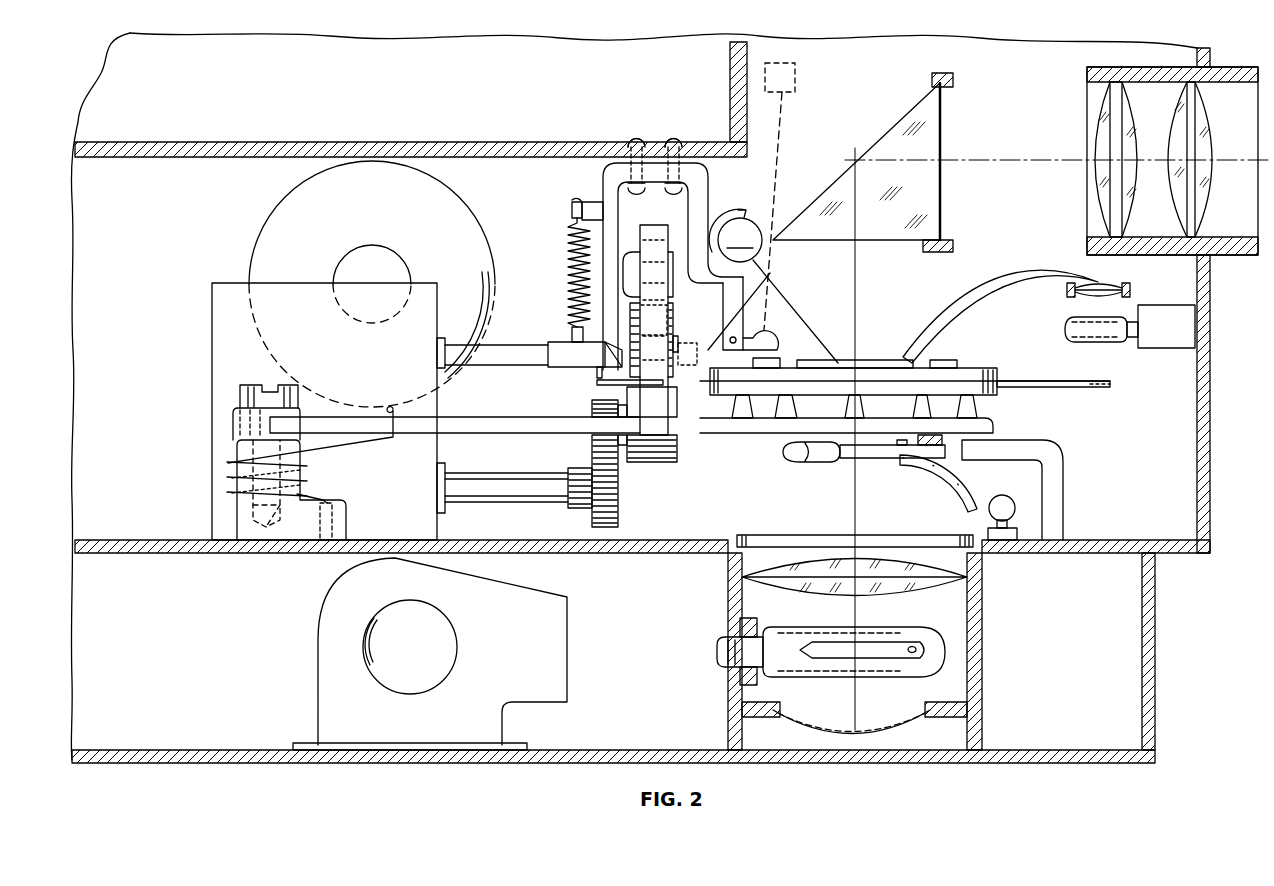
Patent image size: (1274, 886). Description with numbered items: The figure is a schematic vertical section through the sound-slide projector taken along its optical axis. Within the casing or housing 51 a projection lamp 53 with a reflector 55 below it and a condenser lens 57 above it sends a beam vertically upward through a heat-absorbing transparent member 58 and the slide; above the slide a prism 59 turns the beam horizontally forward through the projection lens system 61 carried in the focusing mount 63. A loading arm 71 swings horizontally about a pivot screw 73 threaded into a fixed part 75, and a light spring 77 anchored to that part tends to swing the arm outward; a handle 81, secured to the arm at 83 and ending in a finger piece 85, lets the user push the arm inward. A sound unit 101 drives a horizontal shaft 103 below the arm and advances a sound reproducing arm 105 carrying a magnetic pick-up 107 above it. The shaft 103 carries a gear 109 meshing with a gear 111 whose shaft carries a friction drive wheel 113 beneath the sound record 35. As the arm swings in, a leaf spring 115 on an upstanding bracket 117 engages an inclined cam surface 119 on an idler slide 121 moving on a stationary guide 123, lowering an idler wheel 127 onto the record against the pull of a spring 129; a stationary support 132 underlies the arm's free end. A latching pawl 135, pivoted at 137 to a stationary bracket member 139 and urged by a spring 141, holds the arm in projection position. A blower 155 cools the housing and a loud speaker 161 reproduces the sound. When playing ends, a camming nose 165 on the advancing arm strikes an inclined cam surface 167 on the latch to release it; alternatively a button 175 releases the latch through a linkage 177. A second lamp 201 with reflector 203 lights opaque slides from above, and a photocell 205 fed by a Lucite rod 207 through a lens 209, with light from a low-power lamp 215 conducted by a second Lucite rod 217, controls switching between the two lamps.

The sound record 35 is at (1110, 387).
The casing or housing 51 is at (1207, 553).
The projection bulb or lamp 53 is at (935, 650).
The reflector 55 is at (885, 720).
The condenser lens 57 is at (928, 583).
The heat-absorbing transparent member 58 is at (795, 535).
The prism 59 is at (940, 200).
The projection lens system 61 is at (1178, 200).
The focusing mount 63 is at (1155, 67).
The loading arm 71 is at (495, 422).
The pivot screw 73 is at (265, 385).
The fixed part 75 is at (250, 520).
The light spring 77 is at (300, 490).
The handle 81 is at (870, 455).
The handle attachment point 83 is at (917, 472).
The finger piece 85 is at (800, 455).
The sound unit 101 is at (212, 405).
The horizontal shaft 103 is at (515, 490).
The sound reproducing arm 105 is at (510, 345).
The magnetic pick-up 107 is at (597, 372).
The gear 109 is at (605, 505).
The gear 111 is at (595, 440).
The friction drive wheel 113 is at (677, 440).
The leaf spring 115 is at (652, 235).
The upstanding bracket 117 is at (655, 320).
The inclined cam surface 119 is at (640, 262).
The idler slide 121 is at (632, 303).
The stationary guide 123 is at (603, 180).
The idler wheel 127 is at (603, 385).
The spring 129 is at (575, 232).
The stationary support 132 is at (1010, 450).
The latching pawl 135 is at (838, 363).
The pivot 137 is at (763, 347).
The stationary bracket member 139 is at (708, 205).
The spring 141 is at (763, 304).
The blower 155 is at (322, 640).
The loud speaker 161 is at (266, 240).
The camming nose 165 is at (610, 353).
The inclined cam surface 167 is at (740, 310).
The knob or button 175 is at (790, 80).
The mechanical linkage 177 is at (777, 133).
The second illuminating lamp 201 is at (740, 240).
The reflector 203 is at (748, 208).
The photocell 205 is at (1112, 340).
The Lucite rod 207 is at (975, 307).
The lens 209 is at (1112, 300).
The lamp 215 is at (992, 510).
The Lucite rod 217 is at (930, 493).